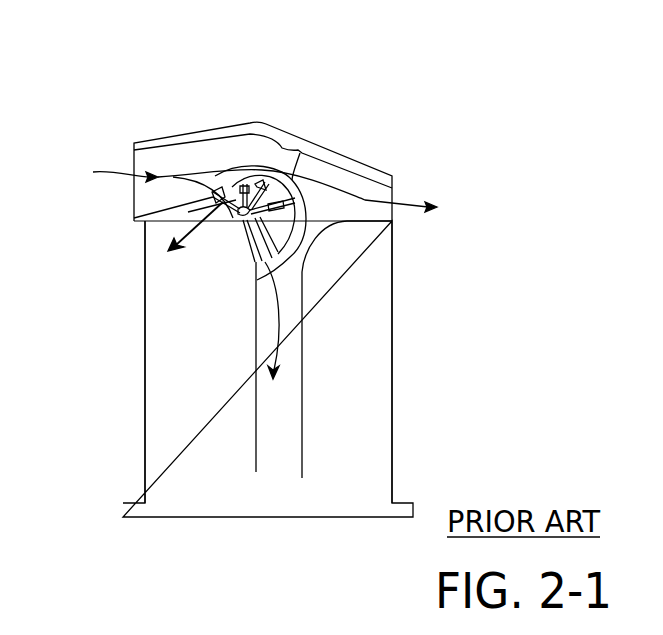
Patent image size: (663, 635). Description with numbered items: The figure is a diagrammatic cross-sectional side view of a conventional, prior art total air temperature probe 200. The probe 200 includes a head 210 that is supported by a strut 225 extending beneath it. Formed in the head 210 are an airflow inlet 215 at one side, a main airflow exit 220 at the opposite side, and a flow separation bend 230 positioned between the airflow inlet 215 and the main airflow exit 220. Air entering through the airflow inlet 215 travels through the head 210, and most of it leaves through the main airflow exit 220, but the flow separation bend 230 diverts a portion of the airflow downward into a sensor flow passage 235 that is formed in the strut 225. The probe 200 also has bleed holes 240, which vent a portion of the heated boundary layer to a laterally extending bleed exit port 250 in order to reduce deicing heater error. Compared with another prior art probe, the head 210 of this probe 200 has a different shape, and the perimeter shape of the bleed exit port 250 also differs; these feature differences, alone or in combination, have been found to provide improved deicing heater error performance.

The TAT probe 200 is at (382, 54).
The head 210 is at (148, 143).
The airflow inlet 215 is at (93, 172).
The main airflow exit 220 is at (393, 186).
The strut 225 is at (392, 293).
The flow separation bend 230 is at (282, 148).
The sensor flow passage 235 is at (302, 357).
The bleed holes 240 is at (208, 256).
The bleed exit port 250 is at (205, 220).